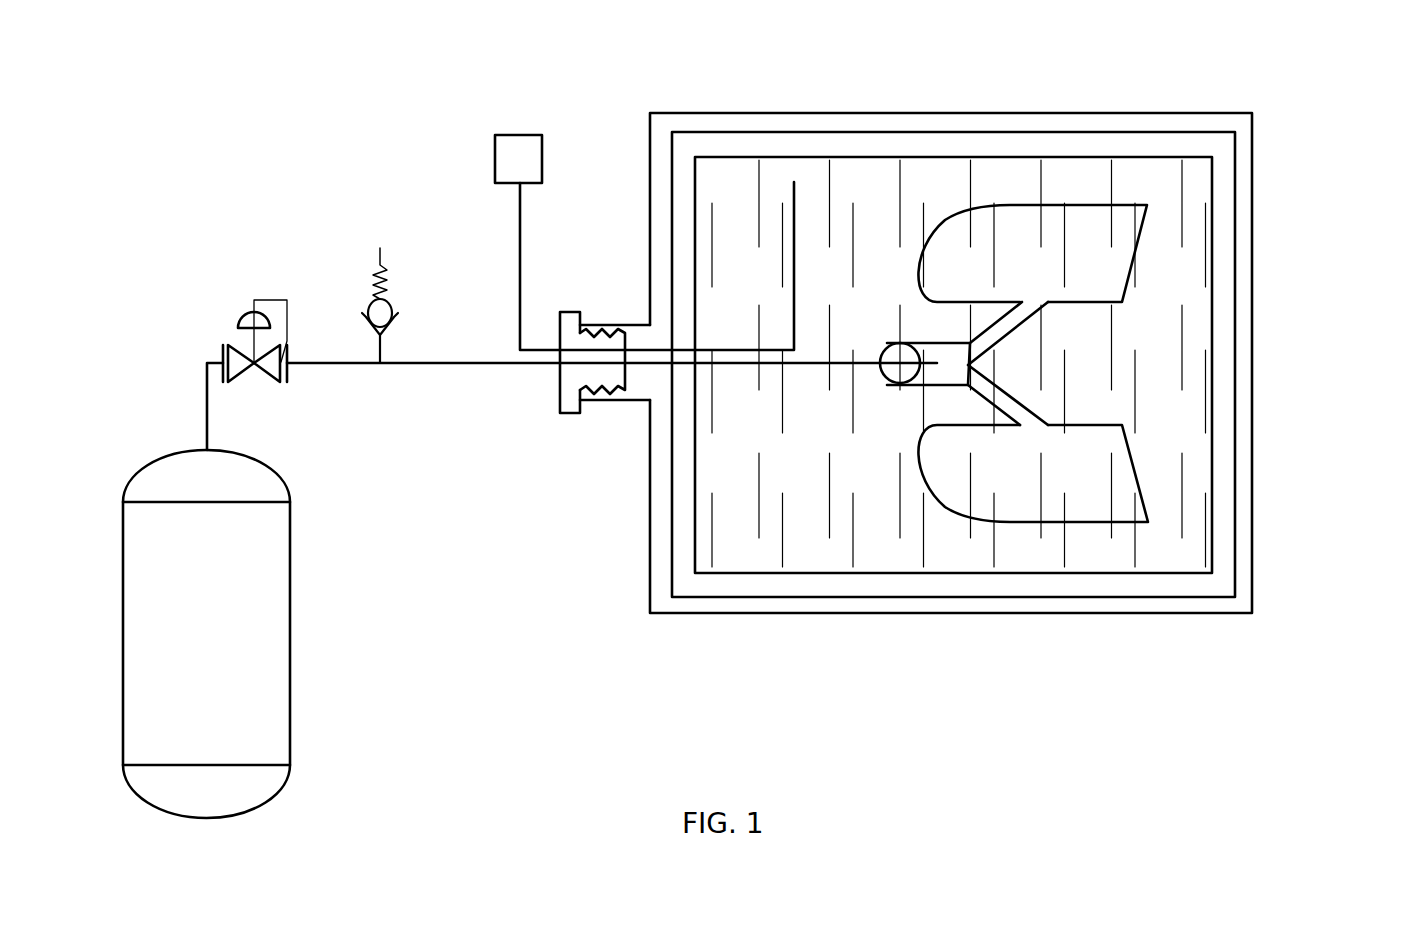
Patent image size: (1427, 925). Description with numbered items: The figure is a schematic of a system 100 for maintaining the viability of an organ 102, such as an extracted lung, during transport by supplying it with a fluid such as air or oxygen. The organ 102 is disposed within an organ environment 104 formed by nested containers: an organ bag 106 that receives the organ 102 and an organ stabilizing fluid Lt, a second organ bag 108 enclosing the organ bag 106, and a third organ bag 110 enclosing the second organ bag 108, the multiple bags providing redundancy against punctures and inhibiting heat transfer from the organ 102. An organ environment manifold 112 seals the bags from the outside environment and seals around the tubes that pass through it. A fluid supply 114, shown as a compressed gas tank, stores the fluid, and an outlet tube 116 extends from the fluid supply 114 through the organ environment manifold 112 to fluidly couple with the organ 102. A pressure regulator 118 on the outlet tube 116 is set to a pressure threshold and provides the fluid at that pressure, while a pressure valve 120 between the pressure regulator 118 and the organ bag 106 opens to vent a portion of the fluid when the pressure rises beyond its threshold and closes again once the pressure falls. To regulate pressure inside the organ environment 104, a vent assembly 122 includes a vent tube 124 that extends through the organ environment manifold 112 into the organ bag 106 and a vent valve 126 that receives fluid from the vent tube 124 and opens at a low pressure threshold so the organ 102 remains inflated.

The system 100 is at (547, 689).
The organ 102 is at (1125, 214).
The organ environment 104 is at (1290, 130).
The organ bag 106 is at (918, 573).
The second organ bag 108 is at (1067, 597).
The third organ bag 110 is at (1220, 613).
The organ environment manifold 112 is at (572, 395).
The fluid supply 114 is at (290, 707).
The outlet tube 116 is at (205, 397).
The pressure regulator 118 is at (243, 317).
The pressure valve 120 is at (380, 250).
The vent assembly 122 is at (577, 151).
The vent tube 124 is at (520, 233).
The vent valve 126 is at (528, 135).
The organ stabilizing fluid Lt is at (1212, 385).